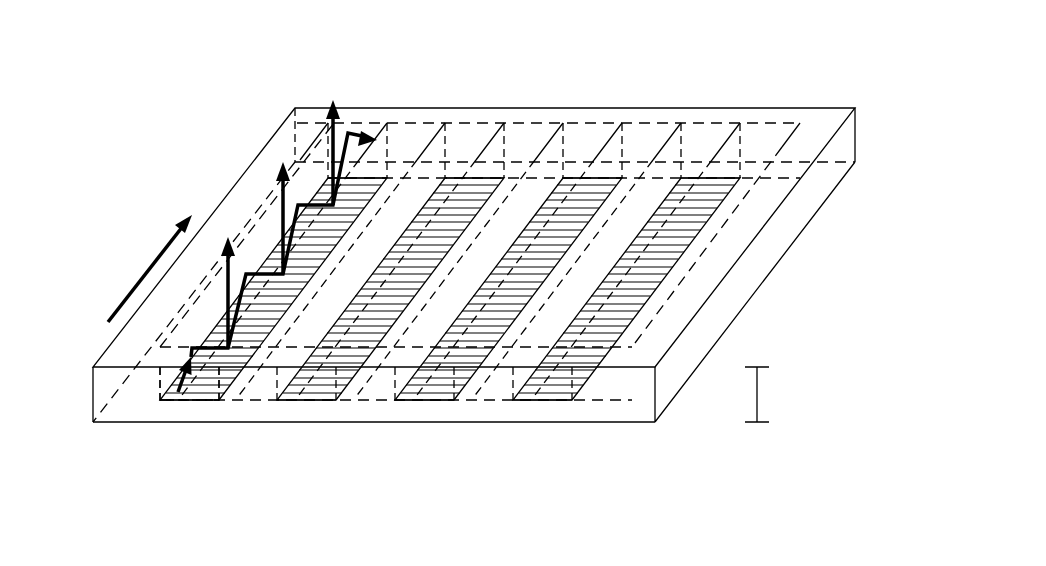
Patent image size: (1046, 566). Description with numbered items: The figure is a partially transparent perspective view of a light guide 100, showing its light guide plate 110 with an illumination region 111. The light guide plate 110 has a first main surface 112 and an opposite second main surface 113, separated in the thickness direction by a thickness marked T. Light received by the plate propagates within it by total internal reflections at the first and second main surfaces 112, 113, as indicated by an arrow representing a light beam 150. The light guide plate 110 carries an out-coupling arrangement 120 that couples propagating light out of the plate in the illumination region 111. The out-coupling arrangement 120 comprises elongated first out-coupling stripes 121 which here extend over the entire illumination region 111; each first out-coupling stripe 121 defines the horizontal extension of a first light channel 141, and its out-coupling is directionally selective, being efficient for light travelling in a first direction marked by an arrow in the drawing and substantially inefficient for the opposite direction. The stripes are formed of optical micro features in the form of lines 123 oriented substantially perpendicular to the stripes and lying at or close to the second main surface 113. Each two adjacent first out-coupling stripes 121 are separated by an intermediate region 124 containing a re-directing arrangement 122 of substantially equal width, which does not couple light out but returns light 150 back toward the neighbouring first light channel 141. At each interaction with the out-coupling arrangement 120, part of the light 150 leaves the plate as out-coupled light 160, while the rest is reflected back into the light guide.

The light guide 100 is at (208, 140).
The light guide plate 110 is at (516, 259).
The illumination region 111 is at (795, 145).
The first main surface 112 is at (780, 112).
The second main surface 113 is at (569, 430).
The out-coupling arrangement 120 is at (541, 170).
The first out-coupling stripes 121 is at (198, 387).
The re-directing arrangement 122 is at (405, 190).
The lines 123 is at (233, 373).
The intermediate region 124 is at (423, 183).
The first light channel 141 is at (170, 378).
The light beam 150 is at (183, 357).
The out-coupled light 160 is at (283, 218).